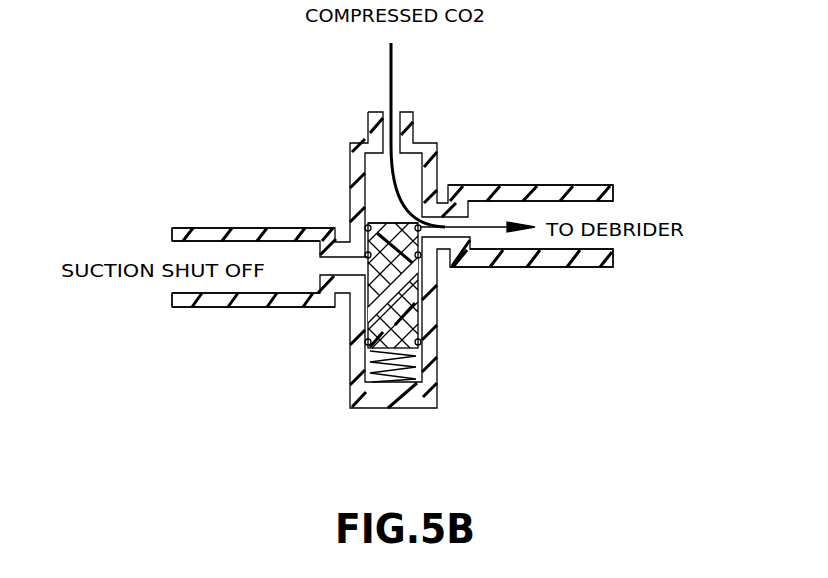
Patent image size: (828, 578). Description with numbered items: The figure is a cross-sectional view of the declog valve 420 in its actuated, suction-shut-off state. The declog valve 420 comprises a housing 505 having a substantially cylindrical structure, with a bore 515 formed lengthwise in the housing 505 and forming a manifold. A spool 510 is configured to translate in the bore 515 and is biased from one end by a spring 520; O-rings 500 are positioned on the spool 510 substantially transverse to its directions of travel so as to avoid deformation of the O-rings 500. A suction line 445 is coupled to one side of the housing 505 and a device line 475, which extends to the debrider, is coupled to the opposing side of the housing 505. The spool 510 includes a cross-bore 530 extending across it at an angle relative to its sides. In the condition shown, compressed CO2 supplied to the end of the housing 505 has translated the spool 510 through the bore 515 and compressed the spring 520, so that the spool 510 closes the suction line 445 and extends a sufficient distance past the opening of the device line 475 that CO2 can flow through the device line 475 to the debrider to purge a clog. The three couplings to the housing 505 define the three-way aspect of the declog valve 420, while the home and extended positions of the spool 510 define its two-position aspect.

The declog valve 420 is at (376, 252).
The suction line 445 is at (205, 308).
The device line 475 is at (591, 185).
The O-rings 500 is at (366, 227).
The housing 505 is at (368, 132).
The spool 510 is at (388, 225).
The bore 515 is at (407, 172).
The spring 520 is at (452, 343).
The cross-bore 530 is at (378, 311).